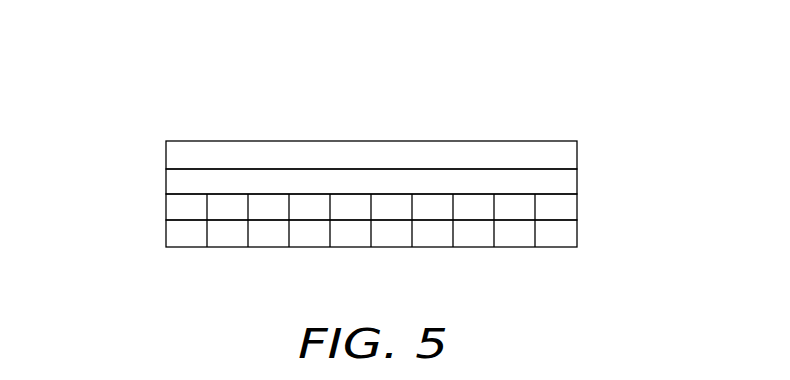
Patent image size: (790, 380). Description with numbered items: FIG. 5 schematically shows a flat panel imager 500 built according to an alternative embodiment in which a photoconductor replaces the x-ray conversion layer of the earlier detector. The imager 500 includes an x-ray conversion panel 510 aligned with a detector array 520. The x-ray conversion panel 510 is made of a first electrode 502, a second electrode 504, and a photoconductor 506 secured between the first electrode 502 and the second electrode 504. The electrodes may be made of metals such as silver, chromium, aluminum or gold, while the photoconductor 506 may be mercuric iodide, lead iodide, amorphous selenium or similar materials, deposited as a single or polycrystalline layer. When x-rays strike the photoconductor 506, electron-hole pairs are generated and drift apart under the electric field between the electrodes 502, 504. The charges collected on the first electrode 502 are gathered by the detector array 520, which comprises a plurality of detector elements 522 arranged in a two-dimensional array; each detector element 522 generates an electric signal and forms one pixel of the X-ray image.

The imager 500 is at (421, 60).
The first electrode 502 is at (350, 141).
The second electrode 504 is at (175, 210).
The photoconductor 506 is at (205, 178).
The x-ray conversion panel 510 is at (608, 142).
The detector array 520 is at (608, 195).
The detector elements 522 is at (175, 235).